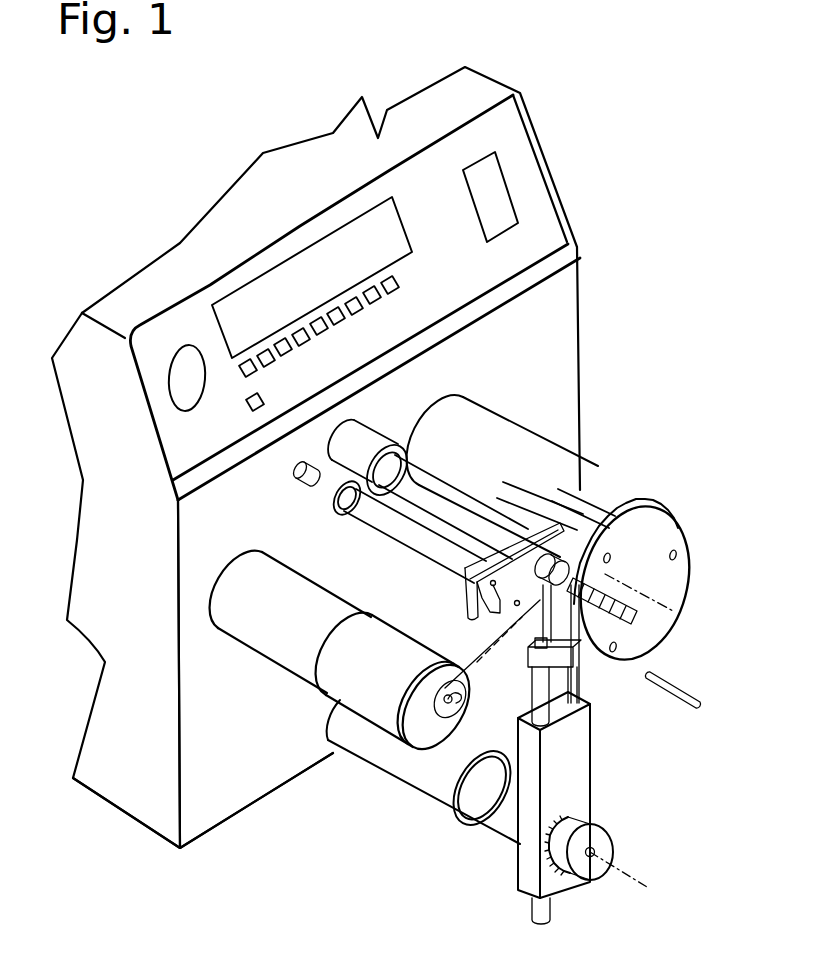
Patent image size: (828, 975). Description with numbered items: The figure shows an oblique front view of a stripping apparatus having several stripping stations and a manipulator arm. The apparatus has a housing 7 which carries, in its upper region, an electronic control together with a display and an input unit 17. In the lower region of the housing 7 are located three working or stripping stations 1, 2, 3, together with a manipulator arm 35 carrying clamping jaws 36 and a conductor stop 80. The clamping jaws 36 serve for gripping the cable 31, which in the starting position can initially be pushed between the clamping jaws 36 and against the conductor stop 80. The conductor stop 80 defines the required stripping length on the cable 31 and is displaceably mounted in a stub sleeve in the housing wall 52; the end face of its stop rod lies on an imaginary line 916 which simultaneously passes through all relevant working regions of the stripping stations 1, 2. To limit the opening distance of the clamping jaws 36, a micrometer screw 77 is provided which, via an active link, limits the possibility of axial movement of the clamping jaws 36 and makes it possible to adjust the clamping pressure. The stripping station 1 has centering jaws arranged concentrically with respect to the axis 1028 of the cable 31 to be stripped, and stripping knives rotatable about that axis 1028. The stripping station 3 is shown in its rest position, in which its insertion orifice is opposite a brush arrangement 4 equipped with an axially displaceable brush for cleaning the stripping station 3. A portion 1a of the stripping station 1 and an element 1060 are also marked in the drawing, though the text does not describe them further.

The stripping station 1 is at (655, 523).
The disc rim portion 1a is at (640, 645).
The axis 1028 is at (685, 622).
The stripping station 2 is at (425, 723).
The stripping station 3 is at (522, 548).
The brush arrangement 4 is at (295, 478).
The housing 7 is at (455, 283).
The input unit 17 is at (285, 343).
The cable 31 is at (693, 703).
The manipulator arm 35 is at (570, 775).
The clamping jaws 36 is at (573, 643).
The housing wall 52 is at (228, 763).
The micrometer screw 77 is at (582, 870).
The conductor stop 80 is at (510, 605).
The imaginary line 916 is at (468, 690).
The gear axis 1060 is at (636, 880).